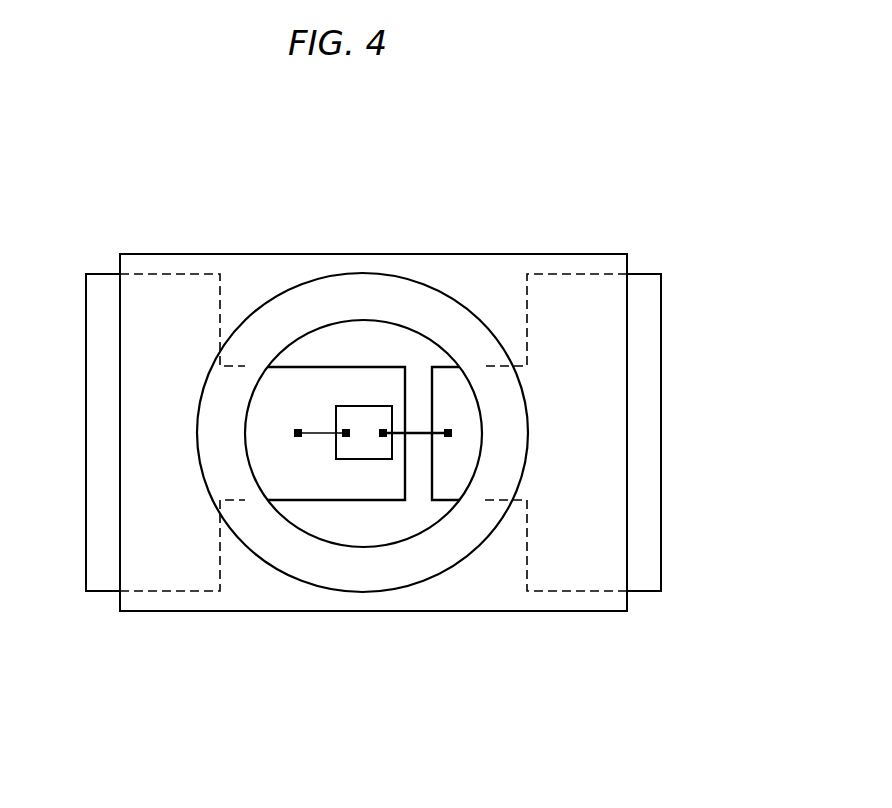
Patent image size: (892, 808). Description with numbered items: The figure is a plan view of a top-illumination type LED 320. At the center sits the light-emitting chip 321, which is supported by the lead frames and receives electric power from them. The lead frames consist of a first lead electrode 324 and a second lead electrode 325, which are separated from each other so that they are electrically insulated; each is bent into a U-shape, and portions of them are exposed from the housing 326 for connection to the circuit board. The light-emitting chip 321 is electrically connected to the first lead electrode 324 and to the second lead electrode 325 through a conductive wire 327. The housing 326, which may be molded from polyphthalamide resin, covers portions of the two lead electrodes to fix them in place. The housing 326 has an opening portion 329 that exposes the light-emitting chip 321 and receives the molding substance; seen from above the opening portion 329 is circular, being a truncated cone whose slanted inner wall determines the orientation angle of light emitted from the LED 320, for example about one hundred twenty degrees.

The LED 320 is at (413, 436).
The light-emitting chip 321 is at (362, 406).
The first lead electrode 324 is at (102, 578).
The second lead electrode 325 is at (662, 553).
The housing 326 is at (499, 612).
The conductive wire 327 is at (320, 432).
The opening portion 329 is at (347, 593).